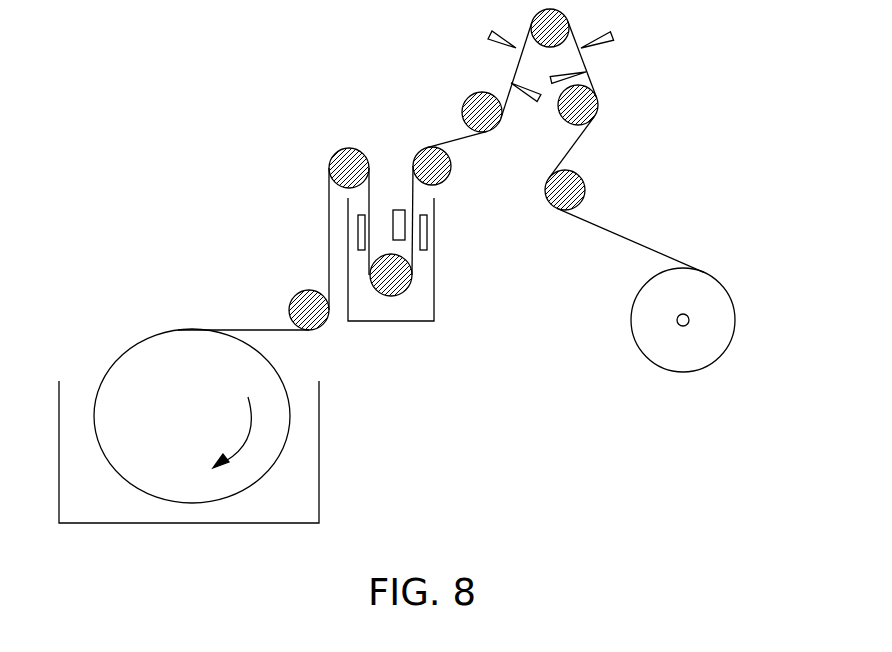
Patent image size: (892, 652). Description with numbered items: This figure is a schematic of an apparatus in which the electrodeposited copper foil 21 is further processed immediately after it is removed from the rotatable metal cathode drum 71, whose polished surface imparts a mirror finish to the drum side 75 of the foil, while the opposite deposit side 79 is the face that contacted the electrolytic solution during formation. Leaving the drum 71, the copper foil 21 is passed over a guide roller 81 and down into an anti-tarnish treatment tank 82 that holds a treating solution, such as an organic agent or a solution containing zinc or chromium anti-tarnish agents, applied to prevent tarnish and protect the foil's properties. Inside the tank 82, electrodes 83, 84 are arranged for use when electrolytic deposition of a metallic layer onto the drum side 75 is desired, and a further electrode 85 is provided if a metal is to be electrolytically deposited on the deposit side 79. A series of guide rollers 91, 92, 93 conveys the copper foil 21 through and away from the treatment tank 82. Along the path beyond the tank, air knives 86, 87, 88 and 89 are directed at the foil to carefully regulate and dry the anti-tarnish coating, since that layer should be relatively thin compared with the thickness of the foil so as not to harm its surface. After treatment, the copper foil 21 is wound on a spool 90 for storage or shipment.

The rotatable metal cathode drum 71 is at (130, 350).
The copper foil 21 is at (251, 329).
The drum side 75 is at (292, 332).
The deposit side 79 is at (327, 232).
The guide roller 81 is at (342, 150).
The anti-tarnish treatment tank 82 is at (400, 322).
The electrode 83 is at (364, 237).
The electrode 84 is at (429, 243).
The further electrode 85 is at (407, 222).
The guide roller 91 is at (413, 284).
The guide roller 92 is at (454, 166).
The guide roller 93 is at (469, 97).
The air knife 86 is at (488, 33).
The air knife 87 is at (542, 100).
The air knife 88 is at (614, 35).
The air knife 89 is at (549, 79).
The spool 90 is at (690, 321).